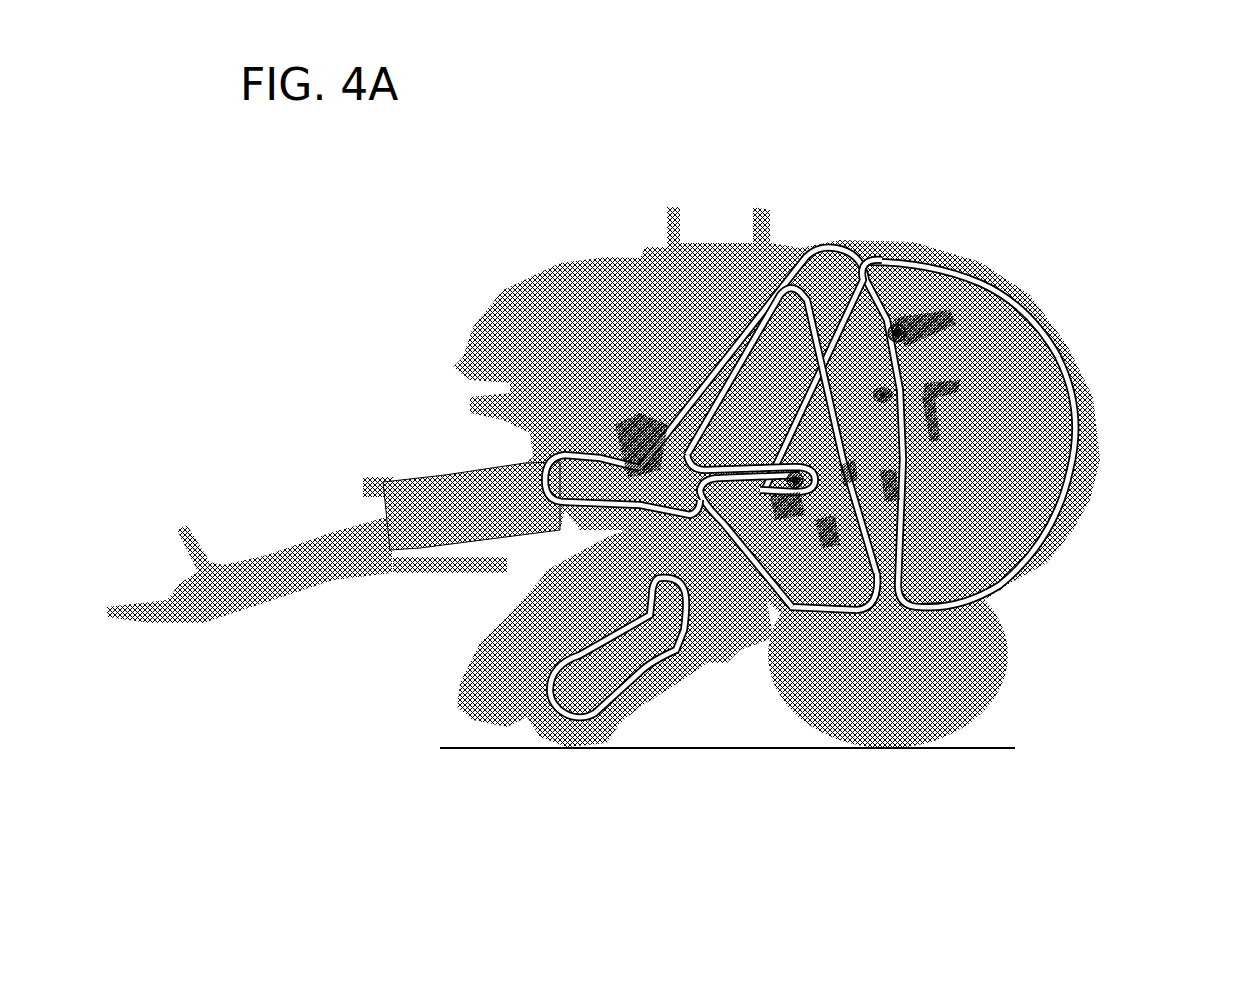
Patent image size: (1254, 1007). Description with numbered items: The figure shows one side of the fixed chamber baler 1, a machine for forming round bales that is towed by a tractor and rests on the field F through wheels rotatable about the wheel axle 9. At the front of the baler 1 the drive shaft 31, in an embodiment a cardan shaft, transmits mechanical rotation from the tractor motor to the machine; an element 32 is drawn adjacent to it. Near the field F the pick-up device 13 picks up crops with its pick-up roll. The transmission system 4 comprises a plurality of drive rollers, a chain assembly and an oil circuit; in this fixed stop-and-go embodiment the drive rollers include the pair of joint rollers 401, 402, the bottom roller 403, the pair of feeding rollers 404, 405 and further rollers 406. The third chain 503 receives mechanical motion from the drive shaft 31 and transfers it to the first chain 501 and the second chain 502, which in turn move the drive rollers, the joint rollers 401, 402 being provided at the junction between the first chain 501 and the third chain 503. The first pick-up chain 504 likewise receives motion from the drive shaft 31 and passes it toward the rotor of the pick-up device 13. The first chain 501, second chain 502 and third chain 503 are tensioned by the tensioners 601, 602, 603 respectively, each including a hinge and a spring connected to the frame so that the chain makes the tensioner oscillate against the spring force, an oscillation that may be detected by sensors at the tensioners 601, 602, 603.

The baler 1 is at (662, 152).
The transmission system 4 is at (602, 518).
The wheel axle 9 is at (880, 623).
The pick-up device 13 is at (547, 727).
The drive shaft 31 is at (393, 503).
The arm member 32 is at (310, 563).
The joint roller 401 is at (833, 280).
The joint roller 402 is at (890, 280).
The bottom roller 403 is at (935, 612).
The feeding roller 404 is at (803, 580).
The feeding roller 405 is at (740, 545).
The further rollers 406 is at (1070, 452).
The first chain 501 is at (977, 287).
The second chain 502 is at (843, 608).
The third chain 503 is at (548, 462).
The first pick-up chain 504 is at (622, 700).
The tensioner 601 is at (647, 427).
The tensioner 602 is at (917, 313).
The tensioner 603 is at (800, 510).
The field F is at (977, 750).